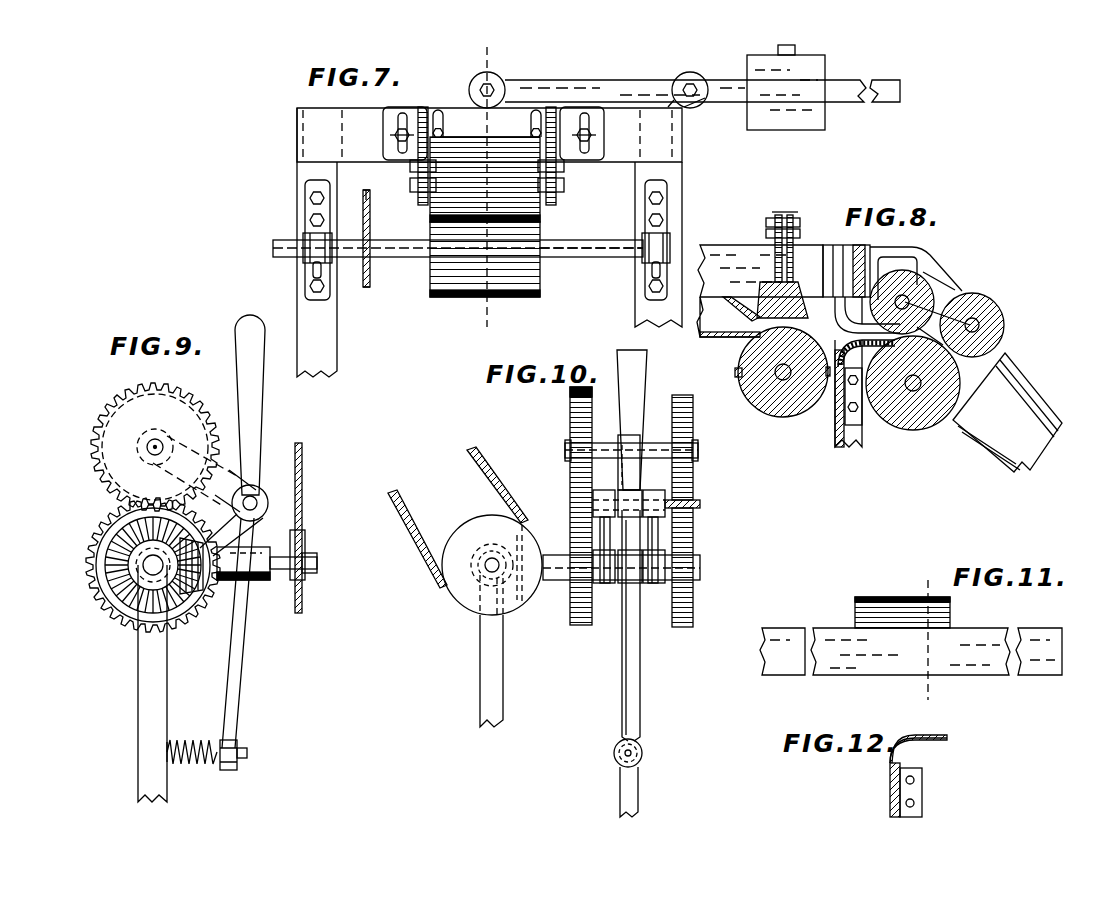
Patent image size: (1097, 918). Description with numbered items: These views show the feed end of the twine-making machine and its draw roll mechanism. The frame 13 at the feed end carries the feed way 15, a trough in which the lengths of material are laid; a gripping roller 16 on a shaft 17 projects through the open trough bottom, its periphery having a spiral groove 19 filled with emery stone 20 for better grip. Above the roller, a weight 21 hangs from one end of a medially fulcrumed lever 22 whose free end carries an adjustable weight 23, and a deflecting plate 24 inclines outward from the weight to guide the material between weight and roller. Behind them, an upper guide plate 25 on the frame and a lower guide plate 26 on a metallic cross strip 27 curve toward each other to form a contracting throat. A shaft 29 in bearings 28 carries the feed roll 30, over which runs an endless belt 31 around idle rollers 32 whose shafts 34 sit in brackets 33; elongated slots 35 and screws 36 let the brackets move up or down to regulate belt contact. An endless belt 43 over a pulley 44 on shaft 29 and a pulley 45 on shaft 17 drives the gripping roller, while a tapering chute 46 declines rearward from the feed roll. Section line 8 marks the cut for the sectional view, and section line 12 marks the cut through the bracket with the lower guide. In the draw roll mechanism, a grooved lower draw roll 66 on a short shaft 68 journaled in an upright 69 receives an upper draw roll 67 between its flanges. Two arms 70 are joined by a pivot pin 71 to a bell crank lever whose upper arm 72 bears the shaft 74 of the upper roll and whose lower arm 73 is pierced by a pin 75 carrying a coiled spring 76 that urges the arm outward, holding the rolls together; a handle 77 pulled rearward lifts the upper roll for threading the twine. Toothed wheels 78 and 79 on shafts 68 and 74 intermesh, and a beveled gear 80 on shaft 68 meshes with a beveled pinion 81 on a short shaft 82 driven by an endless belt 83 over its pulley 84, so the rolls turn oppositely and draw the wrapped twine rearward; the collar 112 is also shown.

In FIG. 7, the section line 8— 8 is at (487, 186).
In FIG. 11, the section line 12— 12 is at (927, 635).
In FIG. 7, the frame 13 is at (298, 318).
In FIG. 8, the frame 13 is at (742, 250).
In FIG. 8, the feed way 15 is at (704, 338).
In FIG. 8, the gripping roller 16 is at (772, 412).
In FIG. 7, the shaft 17 is at (398, 238).
In FIG. 8, the shaft 17 is at (757, 397).
In FIG. 8, the spiral groove 19 is at (742, 378).
In FIG. 8, the emery stone 20 is at (735, 372).
In FIG. 8, the weight 21 is at (795, 282).
In FIG. 7, the lever 22 is at (560, 88).
In FIG. 8, the lever 22 is at (783, 218).
In FIG. 7, the adjustable weight 23 is at (780, 132).
In FIG. 8, the deflecting plate 24 is at (732, 305).
In FIG. 8, the upper guide plate 25 is at (843, 326).
In FIG. 8, the lower guide plate 26 is at (840, 348).
In FIG. 11, the lower guide plate 26 is at (858, 596).
In FIG. 12, the lower guide plate 26 is at (930, 738).
In FIG. 8, the cross strip 27 is at (836, 395).
In FIG. 11, the cross strip 27 is at (985, 672).
In FIG. 12, the cross strip 27 is at (890, 792).
In FIG. 7, the bearings 28 is at (306, 210).
In FIG. 7, the shaft 29 is at (572, 258).
In FIG. 8, the shaft 29 is at (918, 395).
In FIG. 7, the feed roll 30 is at (455, 297).
In FIG. 8, the feed roll 30 is at (895, 425).
In FIG. 7, the endless belt 31 is at (542, 208).
In FIG. 8, the endless belt 31 is at (968, 285).
In FIG. 8, the rollers 32 is at (922, 275).
In FIG. 7, the brackets 33 is at (395, 112).
In FIG. 8, the brackets 33 is at (885, 258).
In FIG. 8, the shafts 34 is at (935, 282).
In FIG. 7, the elongated slots 35 is at (445, 110).
In FIG. 7, the screws 36 is at (394, 135).
In FIG. 7, the endless belt 43 is at (367, 287).
In FIG. 7, the pulley 44 is at (371, 258).
In FIG. 7, the pulley 45 is at (372, 204).
In FIG. 8, the chute 46 is at (1040, 395).
In FIG. 10, the lower draw roll 66 is at (684, 627).
In FIG. 10, the upper draw roll 67 is at (694, 478).
In FIG. 9, the short shaft 68 is at (140, 577).
In FIG. 10, the short shaft 68 is at (560, 580).
In FIG. 9, the upright 69 is at (150, 676).
In FIG. 10, the upright 69 is at (622, 698).
In FIG. 9, the arms 70 is at (255, 538).
In FIG. 10, the arms 70 is at (600, 540).
In FIG. 9, the pivot pin 71 is at (256, 498).
In FIG. 10, the pivot pin 71 is at (594, 495).
In FIG. 9, the upper arm 72 is at (222, 475).
In FIG. 10, the upper arm 72 is at (640, 470).
In FIG. 9, the lower arm 73 is at (235, 690).
In FIG. 10, the lower arm 73 is at (634, 700).
In FIG. 9, the shaft 74 is at (158, 440).
In FIG. 10, the shaft 74 is at (606, 443).
In FIG. 9, the pin 75 is at (238, 760).
In FIG. 10, the pin 75 is at (643, 754).
In FIG. 9, the coiled spring 76 is at (198, 764).
In FIG. 9, the handle 77 is at (255, 405).
In FIG. 10, the handle 77 is at (642, 385).
In FIG. 9, the toothed wheel 78 is at (92, 568).
In FIG. 10, the toothed wheel 78 is at (580, 626).
In FIG. 9, the toothed wheel 79 is at (98, 448).
In FIG. 10, the toothed wheel 79 is at (570, 430).
In FIG. 9, the beveled gear 80 is at (110, 585).
In FIG. 9, the beveled pinion 81 is at (194, 585).
In FIG. 9, the short shaft 82 is at (280, 582).
In FIG. 10, the short shaft 82 is at (488, 560).
In FIG. 9, the endless belt 83 is at (303, 490).
In FIG. 10, the endless belt 83 is at (410, 538).
In FIG. 9, the pulley 84 is at (305, 582).
In FIG. 10, the pulley 84 is at (465, 592).
In FIG. 10, the collar 112 is at (700, 504).